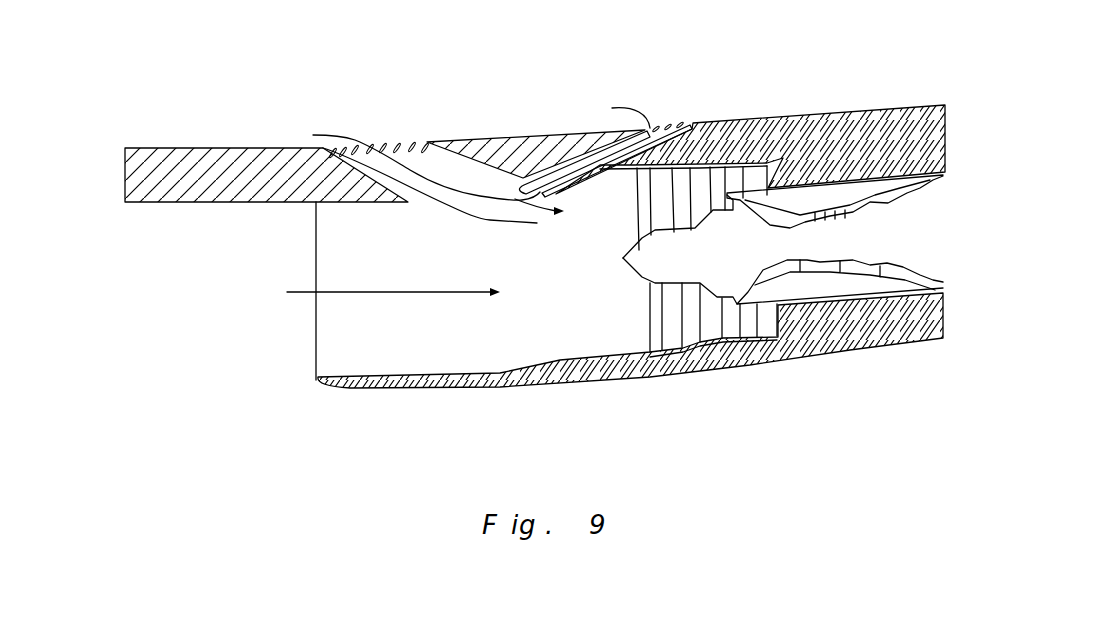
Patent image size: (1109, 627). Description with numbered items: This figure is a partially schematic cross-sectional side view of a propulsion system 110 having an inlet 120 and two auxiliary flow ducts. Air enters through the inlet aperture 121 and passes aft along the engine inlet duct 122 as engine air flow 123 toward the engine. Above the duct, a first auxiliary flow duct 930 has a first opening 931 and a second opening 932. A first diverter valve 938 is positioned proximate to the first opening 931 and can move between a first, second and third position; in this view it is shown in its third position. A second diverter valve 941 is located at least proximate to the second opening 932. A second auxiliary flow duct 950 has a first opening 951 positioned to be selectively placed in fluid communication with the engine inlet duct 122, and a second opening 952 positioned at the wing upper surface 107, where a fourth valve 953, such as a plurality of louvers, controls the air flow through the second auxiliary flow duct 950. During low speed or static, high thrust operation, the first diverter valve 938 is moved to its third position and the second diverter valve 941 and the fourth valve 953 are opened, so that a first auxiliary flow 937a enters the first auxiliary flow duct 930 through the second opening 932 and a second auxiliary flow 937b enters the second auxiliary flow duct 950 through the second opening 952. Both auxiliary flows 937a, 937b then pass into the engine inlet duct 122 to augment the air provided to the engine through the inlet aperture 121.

The wing upper surface 107 is at (168, 148).
The second auxiliary flow duct 950 is at (345, 178).
The second opening 952 is at (362, 128).
The fourth valve 953 is at (392, 148).
The first auxiliary flow duct 930 is at (554, 170).
The second auxiliary flow 937b is at (447, 190).
The first auxiliary flow 937a is at (588, 165).
The second opening 932 is at (665, 100).
The second diverter valve 941 is at (684, 112).
The propulsion system 110 is at (757, 393).
The engine inlet duct 122 is at (583, 348).
The inlet aperture 121 is at (313, 365).
The inlet 120 is at (290, 268).
The engine air flow 123 is at (298, 293).
The first opening 951 is at (472, 222).
The first diverter valve 938 is at (500, 222).
The first opening 931 is at (525, 204).